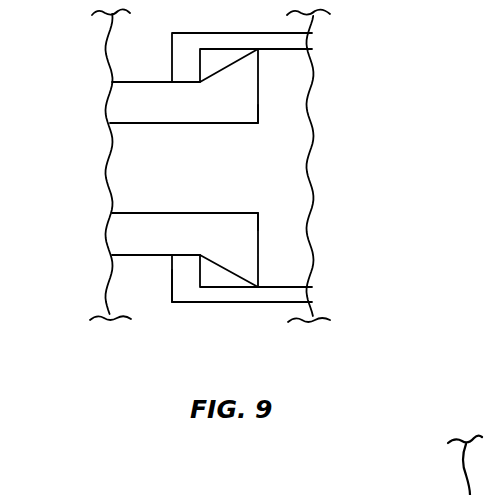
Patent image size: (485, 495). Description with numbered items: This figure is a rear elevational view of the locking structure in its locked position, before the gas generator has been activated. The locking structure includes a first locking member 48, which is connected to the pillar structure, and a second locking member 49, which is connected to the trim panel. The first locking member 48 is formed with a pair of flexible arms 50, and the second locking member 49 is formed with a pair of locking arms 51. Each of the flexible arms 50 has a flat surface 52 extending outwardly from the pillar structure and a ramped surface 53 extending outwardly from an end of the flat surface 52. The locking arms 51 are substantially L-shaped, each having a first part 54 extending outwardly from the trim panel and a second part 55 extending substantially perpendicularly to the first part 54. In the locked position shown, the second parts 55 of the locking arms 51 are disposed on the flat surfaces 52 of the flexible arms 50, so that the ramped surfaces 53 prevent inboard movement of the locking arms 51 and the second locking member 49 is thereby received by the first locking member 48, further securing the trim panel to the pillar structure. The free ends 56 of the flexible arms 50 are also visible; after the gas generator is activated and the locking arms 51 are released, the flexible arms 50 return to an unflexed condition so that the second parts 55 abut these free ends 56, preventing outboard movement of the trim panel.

The first locking member 48 is at (128, 255).
The second locking member 49 is at (308, 298).
The flexible arms 50 is at (128, 123).
The locking arms 51 is at (293, 50).
The flat surface 52 is at (122, 82).
The ramped surface 53 is at (238, 60).
The first part 54 is at (263, 303).
The second part 55 is at (172, 276).
The free ends 56 is at (258, 105).